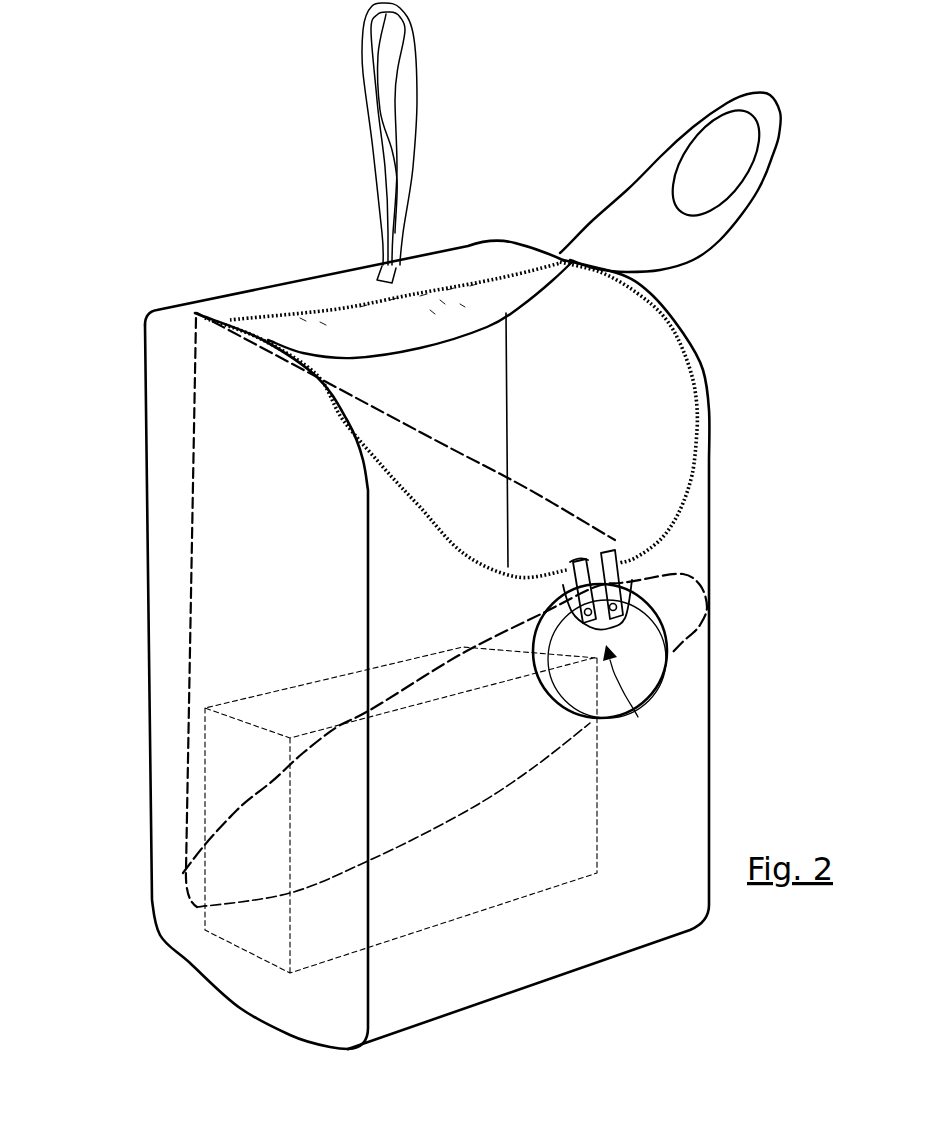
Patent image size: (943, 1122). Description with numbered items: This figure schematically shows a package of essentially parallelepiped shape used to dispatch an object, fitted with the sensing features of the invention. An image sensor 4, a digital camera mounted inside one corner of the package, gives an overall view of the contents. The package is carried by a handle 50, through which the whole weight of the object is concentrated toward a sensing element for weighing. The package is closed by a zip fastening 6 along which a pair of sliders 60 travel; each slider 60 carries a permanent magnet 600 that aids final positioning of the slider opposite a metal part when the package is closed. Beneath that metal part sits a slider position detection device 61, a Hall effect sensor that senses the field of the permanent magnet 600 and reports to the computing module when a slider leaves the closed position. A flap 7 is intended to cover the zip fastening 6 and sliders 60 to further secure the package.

The image sensor 4 is at (224, 303).
The zip fastening 6 is at (415, 502).
The flap 7 is at (698, 201).
The handle 50 is at (370, 78).
The slider 60 is at (585, 563).
The permanent magnet 600 is at (612, 636).
The slider position detection device 61 is at (643, 693).